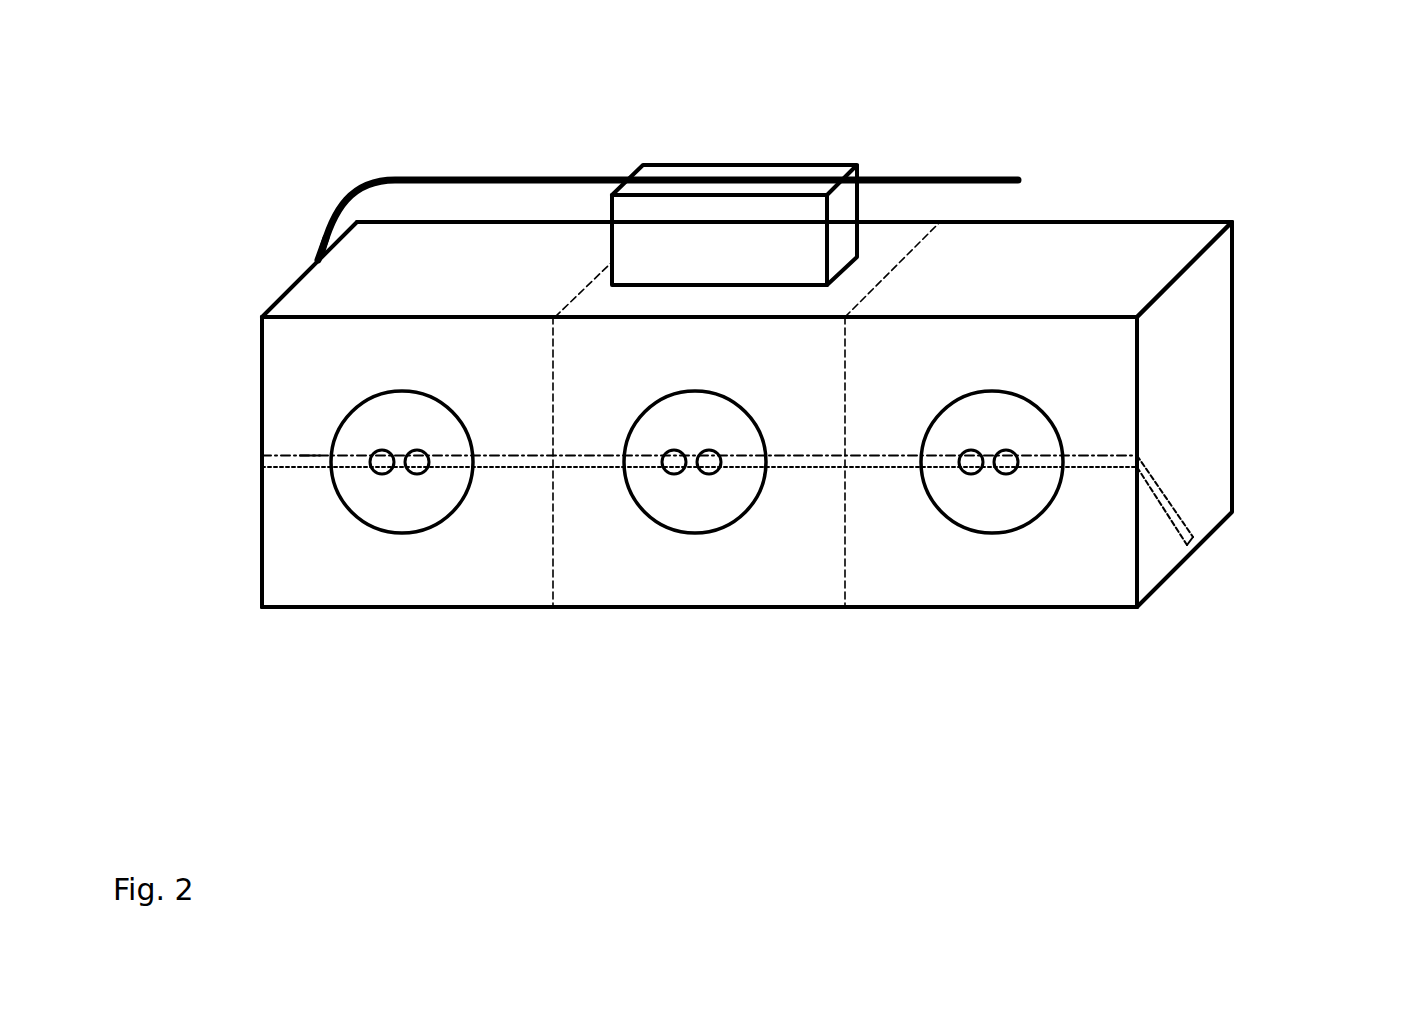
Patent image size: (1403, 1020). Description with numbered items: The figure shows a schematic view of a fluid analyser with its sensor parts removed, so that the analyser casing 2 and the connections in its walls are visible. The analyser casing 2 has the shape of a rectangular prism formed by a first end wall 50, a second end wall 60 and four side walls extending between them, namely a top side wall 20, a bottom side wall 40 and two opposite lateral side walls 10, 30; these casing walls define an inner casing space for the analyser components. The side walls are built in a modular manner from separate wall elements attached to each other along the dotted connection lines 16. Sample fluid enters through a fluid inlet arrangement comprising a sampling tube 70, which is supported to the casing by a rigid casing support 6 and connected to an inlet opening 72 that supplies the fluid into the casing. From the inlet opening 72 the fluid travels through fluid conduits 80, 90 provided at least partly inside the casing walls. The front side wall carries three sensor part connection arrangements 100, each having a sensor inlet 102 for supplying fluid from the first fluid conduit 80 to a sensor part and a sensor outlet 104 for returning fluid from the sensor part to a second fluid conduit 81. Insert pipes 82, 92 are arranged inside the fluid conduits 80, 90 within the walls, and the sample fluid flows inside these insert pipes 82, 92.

The analyser casing 2 is at (1256, 180).
The casing support 6 is at (748, 165).
The lateral side wall 10 is at (328, 588).
The connection lines 16 is at (848, 572).
The top side wall 20 is at (1053, 240).
The lateral side wall 30 is at (1152, 220).
The bottom side wall 40 is at (1068, 608).
The first end wall 50 is at (262, 350).
The second end wall 60 is at (1208, 365).
The sampling tube 70 is at (453, 175).
The inlet opening 72 is at (318, 258).
The first fluid conduit 80 is at (290, 452).
The second fluid conduit 81 is at (510, 470).
The insert pipe 82 is at (263, 458).
The fluid conduit 90 is at (1168, 493).
The insert pipe 92 is at (1197, 543).
The sensor part connection arrangement 100 is at (415, 533).
The sensor inlet 102 is at (673, 472).
The sensor outlet 104 is at (708, 474).